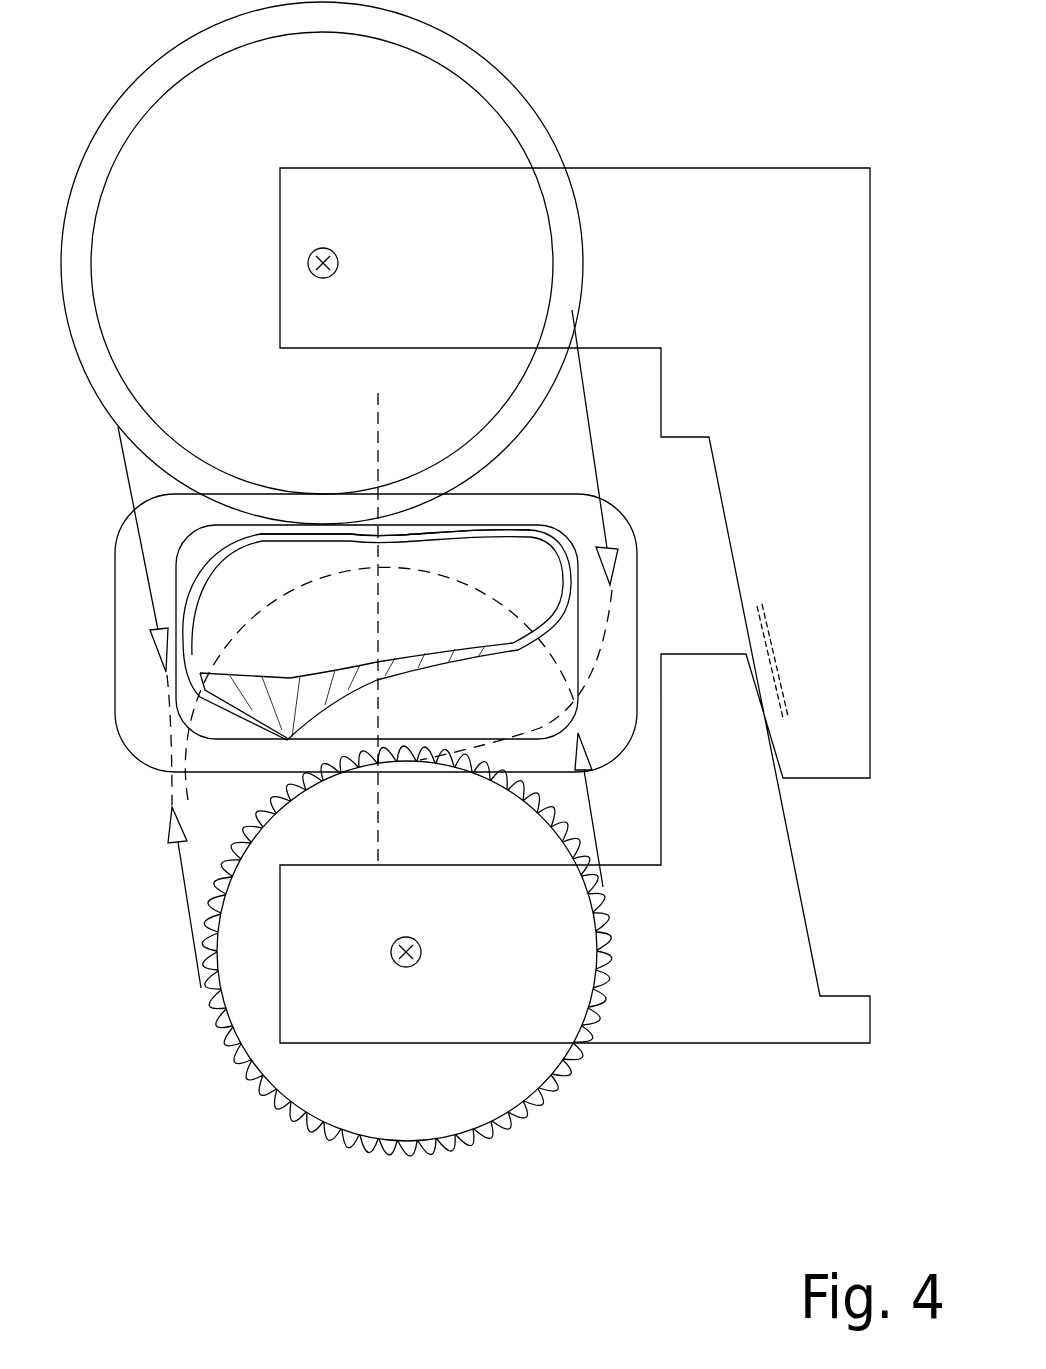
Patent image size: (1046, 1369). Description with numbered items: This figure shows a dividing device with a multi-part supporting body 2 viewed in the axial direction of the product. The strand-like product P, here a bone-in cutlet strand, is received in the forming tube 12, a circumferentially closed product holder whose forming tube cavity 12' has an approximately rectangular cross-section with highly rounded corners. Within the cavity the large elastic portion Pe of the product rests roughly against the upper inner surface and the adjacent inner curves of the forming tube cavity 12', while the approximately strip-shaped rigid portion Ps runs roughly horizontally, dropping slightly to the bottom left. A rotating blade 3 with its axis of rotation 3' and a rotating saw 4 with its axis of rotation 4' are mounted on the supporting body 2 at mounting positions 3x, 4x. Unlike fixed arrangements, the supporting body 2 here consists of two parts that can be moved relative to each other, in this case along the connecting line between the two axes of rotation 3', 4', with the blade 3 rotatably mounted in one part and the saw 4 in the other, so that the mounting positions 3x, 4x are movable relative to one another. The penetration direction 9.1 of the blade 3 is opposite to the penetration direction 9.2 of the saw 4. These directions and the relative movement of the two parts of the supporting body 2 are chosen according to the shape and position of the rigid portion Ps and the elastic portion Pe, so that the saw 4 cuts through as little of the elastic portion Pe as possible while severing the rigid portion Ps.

The supporting body 2 is at (575, 605).
The blade 3 is at (356, 263).
The axis of rotation of the blade 3' is at (366, 240).
The mounting position of the blade 3x is at (334, 253).
The saw 4 is at (345, 951).
The axis of rotation of the saw 4' is at (451, 931).
The mounting position of the saw 4x is at (417, 944).
The penetration direction of the blade 9.1 is at (583, 400).
The penetration direction of the saw 9.2 is at (185, 886).
The forming tube 12 is at (376, 633).
The forming tube cavity 12' is at (561, 795).
The product P is at (425, 662).
The elastic portion Pe is at (380, 567).
The rigid portion Ps is at (268, 697).